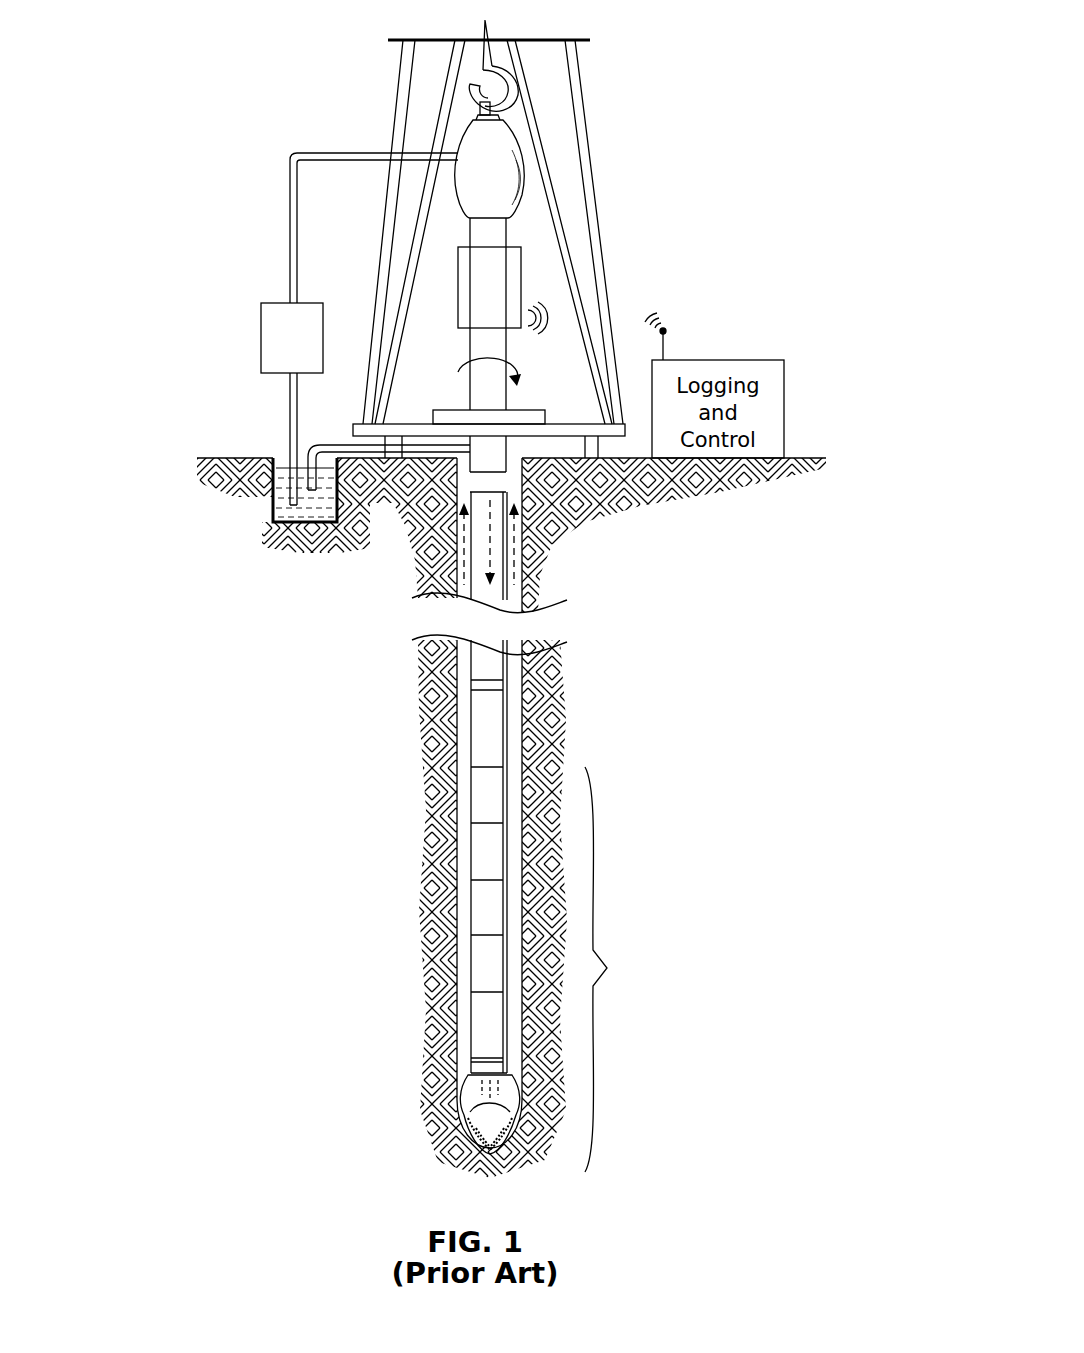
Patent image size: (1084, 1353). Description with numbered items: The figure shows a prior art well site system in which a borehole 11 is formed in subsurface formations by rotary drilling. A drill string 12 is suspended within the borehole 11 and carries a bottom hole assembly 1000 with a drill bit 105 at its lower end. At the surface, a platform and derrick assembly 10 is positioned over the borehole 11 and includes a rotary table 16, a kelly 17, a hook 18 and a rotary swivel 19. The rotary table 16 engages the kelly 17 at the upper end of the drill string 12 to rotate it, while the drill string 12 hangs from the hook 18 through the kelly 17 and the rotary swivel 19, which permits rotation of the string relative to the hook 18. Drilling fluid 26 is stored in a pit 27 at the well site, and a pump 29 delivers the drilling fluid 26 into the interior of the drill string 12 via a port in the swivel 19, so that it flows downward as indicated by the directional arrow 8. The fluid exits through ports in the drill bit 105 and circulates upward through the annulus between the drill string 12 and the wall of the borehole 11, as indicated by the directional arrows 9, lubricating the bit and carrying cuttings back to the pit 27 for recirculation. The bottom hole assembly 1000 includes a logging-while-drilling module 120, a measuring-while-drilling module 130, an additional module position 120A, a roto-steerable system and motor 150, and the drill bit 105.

The platform and derrick assembly 10 is at (632, 78).
The hook 18 is at (493, 72).
The rotary swivel 19 is at (470, 196).
The kelly 17 is at (470, 390).
The drill string 12 is at (486, 448).
The rotary table 16 is at (533, 410).
The borehole 11 is at (514, 462).
The directional arrows 9 is at (462, 518).
The directional arrow 8 is at (490, 538).
The pump 29 is at (268, 303).
The pit 27 is at (280, 456).
The drilling fluid 26 is at (272, 515).
The bottom hole assembly 1000 is at (627, 969).
The logging-while-drilling module 120 is at (471, 848).
The measuring-while-drilling module 130 is at (471, 912).
The additional LWD/MWD module 120A is at (471, 967).
The roto-steerable system and motor 150 is at (471, 1032).
The drill bit 105 is at (465, 1102).